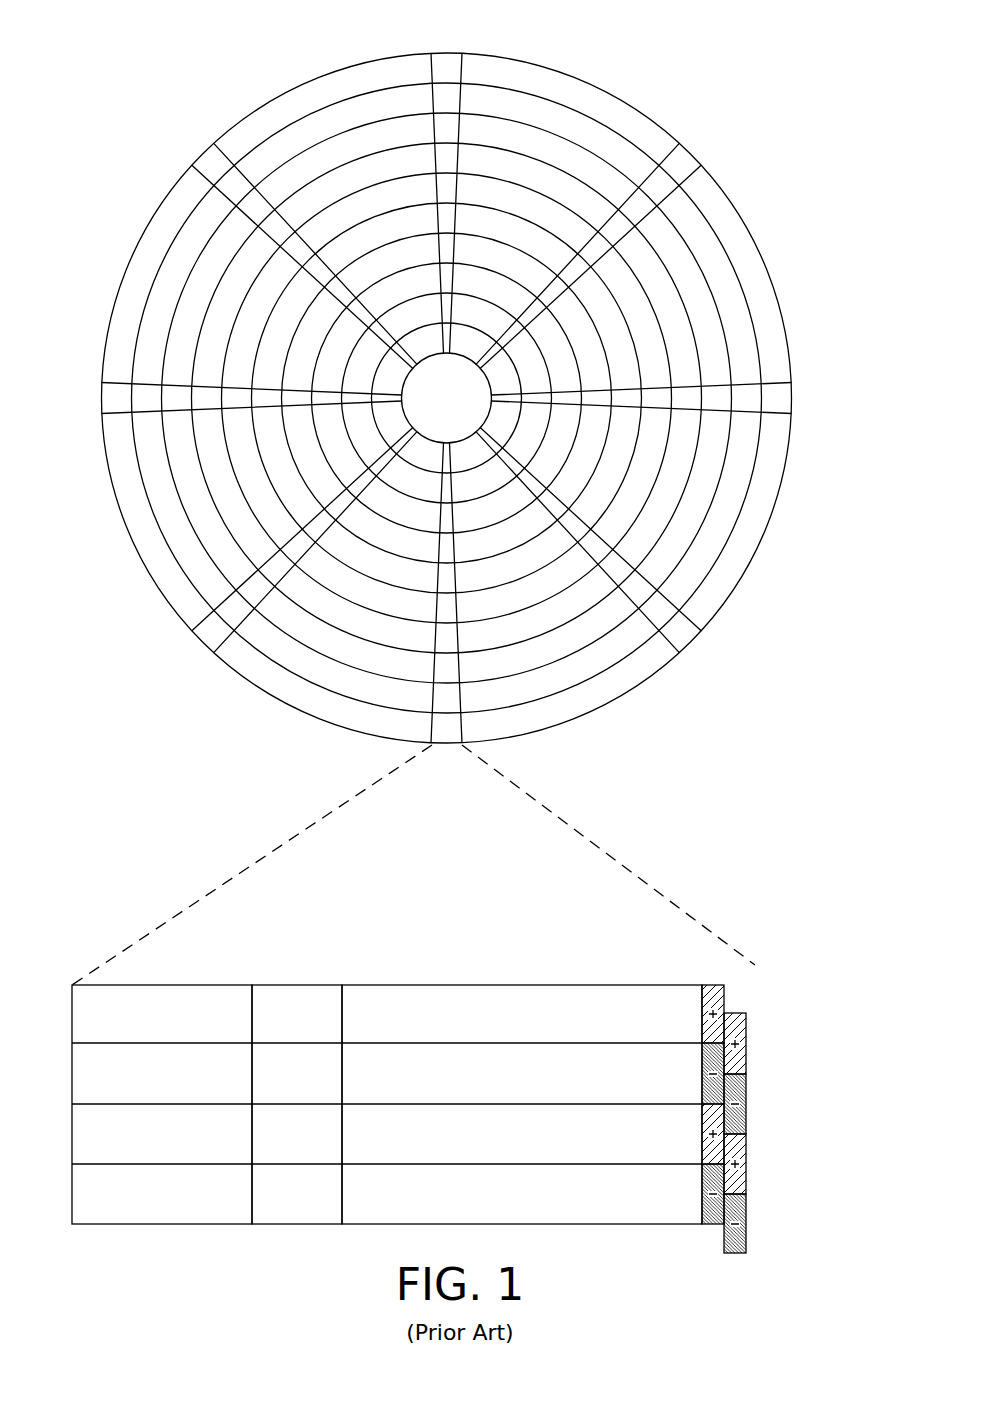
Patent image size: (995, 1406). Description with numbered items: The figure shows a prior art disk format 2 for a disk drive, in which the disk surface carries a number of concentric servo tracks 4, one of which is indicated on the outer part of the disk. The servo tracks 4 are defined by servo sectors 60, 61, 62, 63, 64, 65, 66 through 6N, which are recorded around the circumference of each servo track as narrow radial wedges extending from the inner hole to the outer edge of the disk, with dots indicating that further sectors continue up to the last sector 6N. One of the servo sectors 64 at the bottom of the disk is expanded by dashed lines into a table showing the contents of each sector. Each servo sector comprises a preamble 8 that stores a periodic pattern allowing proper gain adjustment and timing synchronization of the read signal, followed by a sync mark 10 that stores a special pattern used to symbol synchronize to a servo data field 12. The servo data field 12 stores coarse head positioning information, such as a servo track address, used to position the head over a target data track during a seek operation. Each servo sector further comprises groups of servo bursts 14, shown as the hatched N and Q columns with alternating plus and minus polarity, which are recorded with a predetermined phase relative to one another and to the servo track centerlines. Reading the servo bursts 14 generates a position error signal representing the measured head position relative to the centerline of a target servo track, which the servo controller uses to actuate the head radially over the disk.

The disk format 2 is at (186, 55).
The servo tracks 4 is at (563, 125).
The servo sector 60 is at (447, 65).
The servo sector 61 is at (680, 162).
The servo sector 62 is at (782, 400).
The servo sector 63 is at (680, 635).
The servo sector 64 is at (292, 818).
The servo sector 65 is at (208, 640).
The servo sector 66 is at (105, 400).
The servo sector 6N is at (210, 160).
The preamble 8 is at (169, 985).
The sync mark 10 is at (298, 985).
The servo data field 12 is at (512, 985).
The servo bursts 14 is at (748, 978).